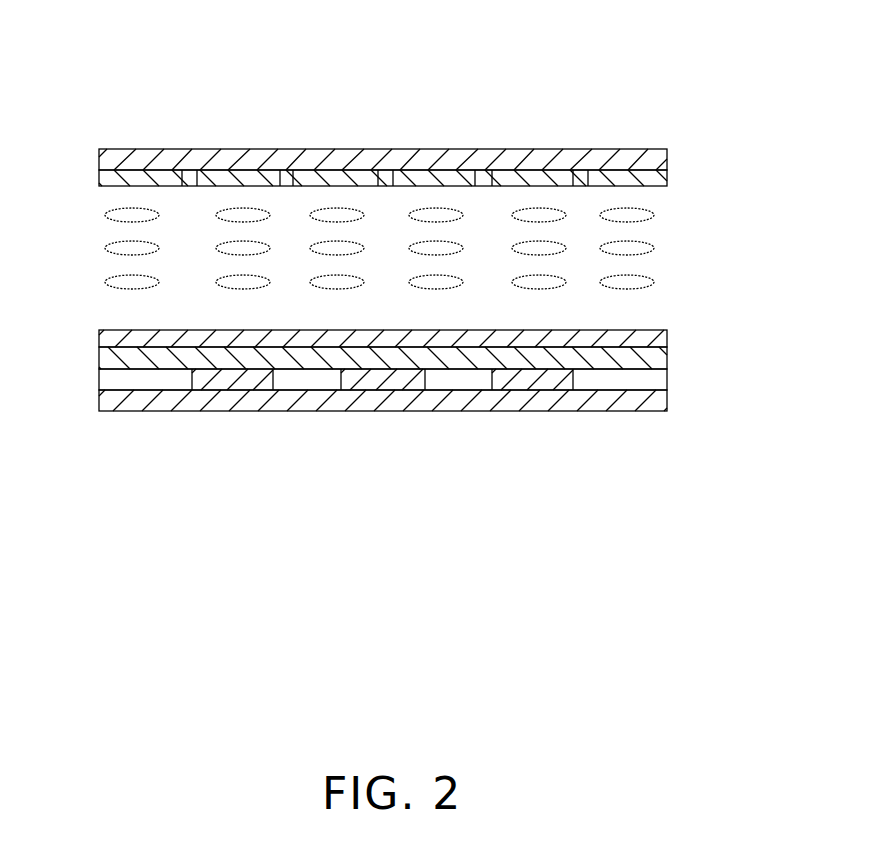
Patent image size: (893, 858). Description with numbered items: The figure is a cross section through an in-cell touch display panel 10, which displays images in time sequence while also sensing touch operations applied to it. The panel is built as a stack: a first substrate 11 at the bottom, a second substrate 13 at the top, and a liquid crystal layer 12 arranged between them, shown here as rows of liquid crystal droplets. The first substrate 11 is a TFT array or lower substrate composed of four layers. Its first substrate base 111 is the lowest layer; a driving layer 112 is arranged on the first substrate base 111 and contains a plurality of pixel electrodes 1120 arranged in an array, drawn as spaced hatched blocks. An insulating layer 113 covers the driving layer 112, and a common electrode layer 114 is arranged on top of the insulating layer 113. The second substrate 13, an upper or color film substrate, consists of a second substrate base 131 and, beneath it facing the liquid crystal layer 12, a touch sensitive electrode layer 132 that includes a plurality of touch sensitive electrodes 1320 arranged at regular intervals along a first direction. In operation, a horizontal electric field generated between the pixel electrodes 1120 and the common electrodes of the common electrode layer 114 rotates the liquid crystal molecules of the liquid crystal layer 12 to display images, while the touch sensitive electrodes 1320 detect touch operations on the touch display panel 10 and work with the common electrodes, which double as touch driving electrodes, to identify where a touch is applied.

The touch display panel 10 is at (350, 63).
The first substrate 11 is at (748, 316).
The liquid crystal layer 12 is at (640, 248).
The second substrate 13 is at (748, 103).
The first substrate base 111 is at (656, 404).
The driving layer 112 is at (667, 380).
The insulating layer 113 is at (667, 356).
The common electrode layer 114 is at (667, 332).
The second substrate base 131 is at (612, 157).
The touch sensitive electrode layer 132 is at (674, 176).
The pixel electrodes 1120 is at (374, 378).
The touch sensitive electrodes 1320 is at (150, 180).